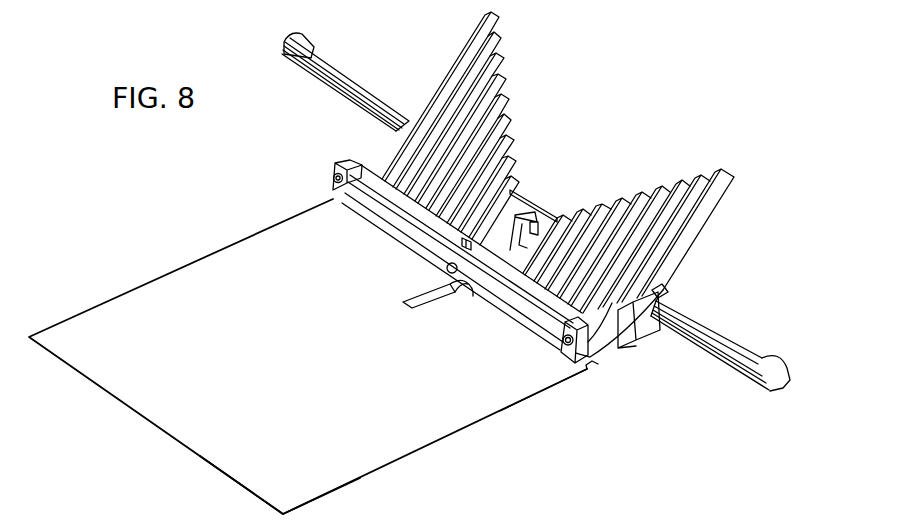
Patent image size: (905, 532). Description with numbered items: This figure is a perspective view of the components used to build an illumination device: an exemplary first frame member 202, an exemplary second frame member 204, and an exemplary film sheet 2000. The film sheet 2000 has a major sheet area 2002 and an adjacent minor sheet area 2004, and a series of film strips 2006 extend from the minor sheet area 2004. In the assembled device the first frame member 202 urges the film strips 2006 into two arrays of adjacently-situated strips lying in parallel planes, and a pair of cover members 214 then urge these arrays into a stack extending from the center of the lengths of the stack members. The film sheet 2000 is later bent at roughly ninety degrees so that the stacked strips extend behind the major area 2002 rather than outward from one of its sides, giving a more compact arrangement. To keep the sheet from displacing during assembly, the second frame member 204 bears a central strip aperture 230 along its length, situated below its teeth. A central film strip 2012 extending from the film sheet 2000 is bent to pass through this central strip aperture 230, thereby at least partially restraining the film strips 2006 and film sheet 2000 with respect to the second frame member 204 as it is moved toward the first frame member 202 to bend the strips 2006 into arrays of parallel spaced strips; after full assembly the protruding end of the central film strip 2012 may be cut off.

The film sheet 2000 is at (185, 262).
The major sheet area 2002 is at (400, 437).
The minor sheet area 2004 is at (591, 364).
The film strips 2006 is at (443, 80).
The second frame member 204 is at (538, 338).
The first frame member 202 is at (650, 338).
The cover members 214 is at (342, 80).
The central strip aperture 230 is at (473, 296).
The central film strip 2012 is at (430, 307).